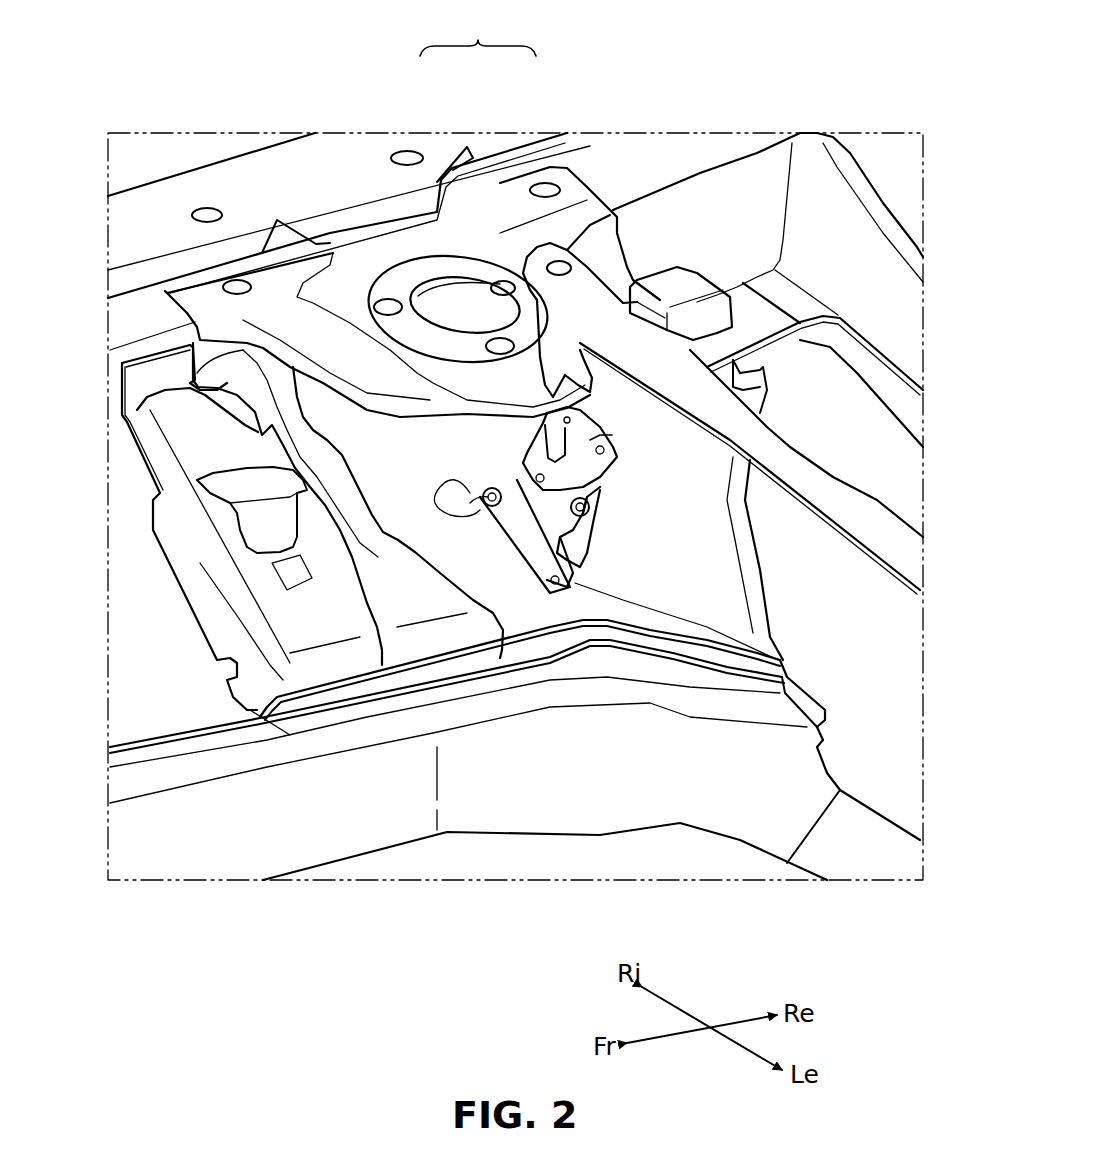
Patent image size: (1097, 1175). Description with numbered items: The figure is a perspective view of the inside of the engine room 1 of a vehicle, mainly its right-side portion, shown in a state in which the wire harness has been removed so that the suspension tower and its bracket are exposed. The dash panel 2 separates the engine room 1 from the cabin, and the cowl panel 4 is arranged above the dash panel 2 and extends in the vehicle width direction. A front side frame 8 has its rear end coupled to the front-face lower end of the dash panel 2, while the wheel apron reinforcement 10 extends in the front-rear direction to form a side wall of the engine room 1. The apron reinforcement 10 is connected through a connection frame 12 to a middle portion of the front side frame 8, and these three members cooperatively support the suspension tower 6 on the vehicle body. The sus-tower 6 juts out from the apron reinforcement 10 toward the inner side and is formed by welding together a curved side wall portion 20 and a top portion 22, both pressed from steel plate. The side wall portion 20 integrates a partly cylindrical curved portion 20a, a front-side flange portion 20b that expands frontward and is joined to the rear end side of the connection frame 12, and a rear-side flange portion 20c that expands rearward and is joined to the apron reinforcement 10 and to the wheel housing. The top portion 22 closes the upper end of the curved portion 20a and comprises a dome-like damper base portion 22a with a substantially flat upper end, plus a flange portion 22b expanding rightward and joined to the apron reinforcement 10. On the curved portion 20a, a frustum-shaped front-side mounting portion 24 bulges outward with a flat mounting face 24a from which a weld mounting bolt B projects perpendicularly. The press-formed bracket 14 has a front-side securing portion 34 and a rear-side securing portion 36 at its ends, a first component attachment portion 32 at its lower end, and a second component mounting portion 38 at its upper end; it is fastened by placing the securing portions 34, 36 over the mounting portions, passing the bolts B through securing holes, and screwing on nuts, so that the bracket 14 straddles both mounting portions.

The engine room 1 is at (150, 634).
The dash panel 2 is at (860, 633).
The cowl panel 4 is at (883, 277).
The suspension tower 6 is at (478, 34).
The front side frame 8 is at (360, 830).
The wheel apron reinforcement 10 is at (658, 147).
The connection frame 12 is at (183, 453).
The bracket 14 is at (572, 473).
The side wall portion 20 is at (383, 457).
The curved portion 20a is at (493, 547).
The front-side flange portion 20b is at (407, 607).
The rear-side flange portion 20c is at (683, 567).
The top portion 22 is at (477, 266).
The damper base portion 22a is at (353, 293).
The flange portion 22b is at (240, 300).
The front-side mounting portion 24 is at (428, 509).
The mounting face 24a is at (470, 503).
The first component attachment portion 32 is at (563, 570).
The front-side securing portion 34 is at (467, 493).
The rear-side securing portion 36 is at (600, 497).
The second component mounting portion 38 is at (597, 440).
The mounting bolt B is at (497, 482).